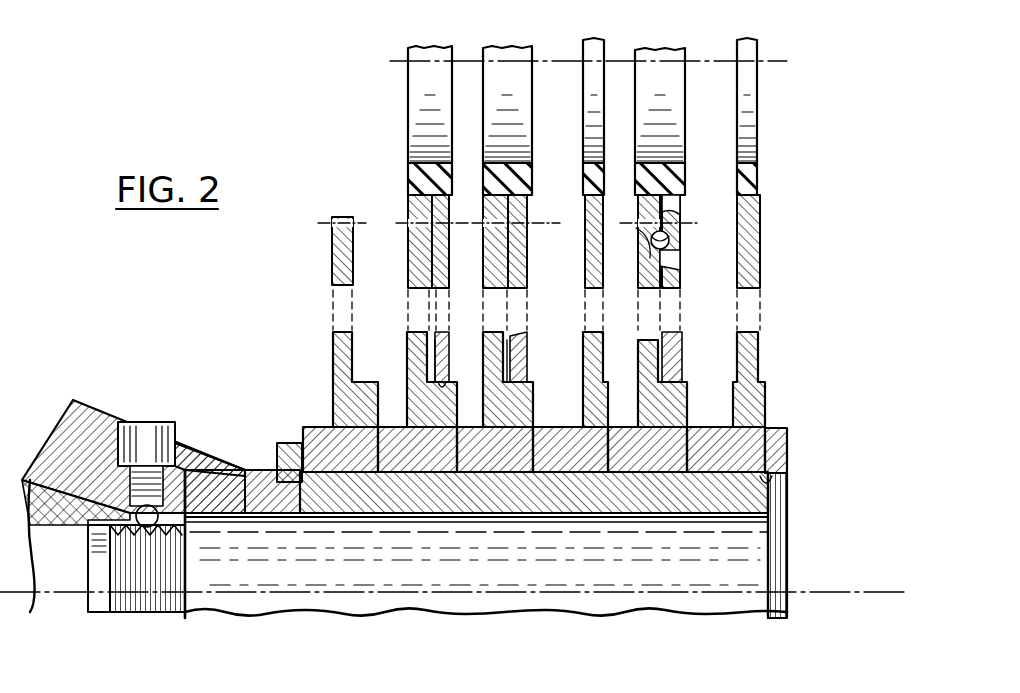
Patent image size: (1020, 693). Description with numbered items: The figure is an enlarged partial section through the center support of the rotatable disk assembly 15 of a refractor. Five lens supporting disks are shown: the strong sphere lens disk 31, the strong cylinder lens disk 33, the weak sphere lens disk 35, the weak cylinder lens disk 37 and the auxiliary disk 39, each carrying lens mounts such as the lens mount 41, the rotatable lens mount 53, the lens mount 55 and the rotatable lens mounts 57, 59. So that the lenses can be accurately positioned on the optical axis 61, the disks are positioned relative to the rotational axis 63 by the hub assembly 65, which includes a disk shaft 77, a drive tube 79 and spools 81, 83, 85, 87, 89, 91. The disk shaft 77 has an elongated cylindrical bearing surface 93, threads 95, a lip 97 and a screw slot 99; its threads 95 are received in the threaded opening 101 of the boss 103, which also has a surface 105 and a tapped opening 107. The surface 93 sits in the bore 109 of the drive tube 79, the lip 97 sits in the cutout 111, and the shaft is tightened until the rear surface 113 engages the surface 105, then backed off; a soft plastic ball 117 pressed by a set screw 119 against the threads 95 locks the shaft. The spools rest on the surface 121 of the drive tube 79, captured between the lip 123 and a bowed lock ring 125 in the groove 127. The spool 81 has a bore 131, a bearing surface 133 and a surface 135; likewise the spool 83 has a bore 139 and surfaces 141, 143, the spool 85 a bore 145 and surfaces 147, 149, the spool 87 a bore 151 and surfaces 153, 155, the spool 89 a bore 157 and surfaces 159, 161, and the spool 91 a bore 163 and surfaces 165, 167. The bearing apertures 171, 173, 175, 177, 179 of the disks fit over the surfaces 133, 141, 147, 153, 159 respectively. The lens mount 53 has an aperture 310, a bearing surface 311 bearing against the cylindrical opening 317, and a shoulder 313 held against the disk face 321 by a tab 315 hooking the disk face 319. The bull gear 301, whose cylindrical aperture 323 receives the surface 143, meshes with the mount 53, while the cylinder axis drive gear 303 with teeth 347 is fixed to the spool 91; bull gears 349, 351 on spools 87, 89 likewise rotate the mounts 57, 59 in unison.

The rotatable disk assembly 15 is at (822, 206).
The strong sphere lens disk 31 is at (762, 266).
The strong cylinder lens disk 33 is at (674, 272).
The weak sphere lens disk 35 is at (584, 218).
The weak cylinder lens disk 37 is at (516, 252).
The auxiliary disk 39 is at (442, 262).
The lens mount 41 is at (758, 182).
The rotatable lens mount 53 is at (638, 192).
The lens mount 55 is at (583, 182).
The rotatable lens mount 57 is at (530, 190).
The rotatable lens mount 59 is at (408, 192).
The optical axis 61 is at (390, 61).
The rotational axis 63 is at (832, 592).
The hub assembly 65 is at (812, 566).
The disk shaft 77 is at (464, 576).
The drive tube 79 is at (534, 492).
The spool 81 is at (726, 449).
The spool 83 is at (647, 449).
The spool 85 is at (570, 449).
The spool 87 is at (495, 449).
The spool 89 is at (417, 449).
The spool 91 is at (340, 449).
The elongated cylindrical bearing surface 93 is at (305, 530).
The threads 95 is at (96, 482).
The lip 97 is at (786, 506).
The screw slot 99 is at (788, 610).
The threaded opening 101 is at (88, 556).
The boss 103 is at (100, 410).
The surface 105 is at (200, 450).
The tapped opening 107 is at (110, 444).
The bore 109 is at (530, 560).
The cutout 111 is at (776, 478).
The rear surface 113 is at (244, 506).
The soft plastic ball 117 is at (182, 546).
The set screw 119 is at (150, 422).
The surface 121 is at (438, 466).
The lip 123 is at (790, 446).
The bowed lock ring 125 is at (270, 440).
The groove 127 is at (276, 454).
The internal cylindrical bore 131 is at (722, 530).
The cylindrical bearing surface 133 is at (760, 360).
The surface 135 is at (706, 427).
The bore 139 is at (647, 530).
The bearing surface 141 is at (711, 328).
The surface 143 is at (616, 410).
The bore 145 is at (572, 530).
The bearing surface 147 is at (590, 332).
The surface 149 is at (538, 400).
The bore 151 is at (493, 530).
The bearing surface 153 is at (524, 336).
The surface 155 is at (459, 361).
The bore 157 is at (433, 530).
The bearing surface 159 is at (464, 340).
The surface 161 is at (362, 400).
The bore 163 is at (362, 530).
The bearing surface 165 is at (365, 364).
The surface 167 is at (310, 426).
The bearing aperture 171 is at (766, 404).
The bearing aperture 173 is at (688, 392).
The bearing aperture 175 is at (624, 328).
The bearing aperture 177 is at (567, 330).
The bearing aperture 179 is at (442, 382).
The bull gear 301 is at (646, 238).
The cylinder axis drive gear 303 is at (340, 254).
The aperture 310 is at (664, 52).
The bearing surface 311 is at (680, 224).
The shoulder 313 is at (672, 258).
The tab 315 is at (676, 206).
The cylindrical opening 317 is at (668, 192).
The disk face 319 is at (668, 332).
The disk face 321 is at (668, 238).
The cylindrical aperture 323 is at (698, 460).
The teeth 347 is at (334, 222).
The bull gear 349 is at (452, 269).
The bull gear 351 is at (412, 272).